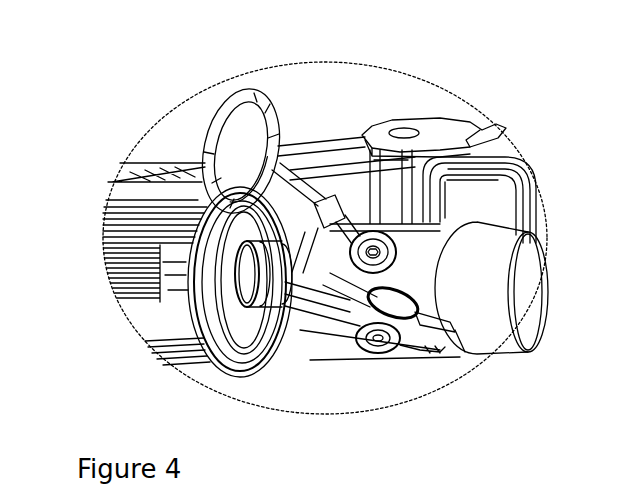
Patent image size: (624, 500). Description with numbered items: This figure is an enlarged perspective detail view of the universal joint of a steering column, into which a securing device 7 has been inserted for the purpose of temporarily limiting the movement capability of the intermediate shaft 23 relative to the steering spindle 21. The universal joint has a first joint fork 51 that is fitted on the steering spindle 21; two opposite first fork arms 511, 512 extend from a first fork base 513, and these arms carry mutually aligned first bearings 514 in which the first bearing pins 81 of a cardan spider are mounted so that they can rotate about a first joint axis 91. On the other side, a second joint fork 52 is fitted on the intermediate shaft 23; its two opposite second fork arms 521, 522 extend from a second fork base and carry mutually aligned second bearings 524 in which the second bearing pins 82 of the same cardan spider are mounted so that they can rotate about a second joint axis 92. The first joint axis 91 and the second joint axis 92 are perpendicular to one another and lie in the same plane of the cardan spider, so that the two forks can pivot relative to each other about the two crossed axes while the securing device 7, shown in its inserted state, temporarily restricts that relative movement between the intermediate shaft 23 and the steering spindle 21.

The securing device 7 is at (334, 200).
The steering spindle 21 is at (118, 256).
The intermediate shaft 23 is at (524, 294).
The first joint fork 51 is at (215, 333).
The second joint fork 52 is at (495, 252).
The first bearing pins 81 is at (375, 350).
The second bearing pins 82 is at (475, 155).
The first joint axis 91 is at (382, 347).
The second joint axis 92 is at (440, 220).
The first fork arm 511 is at (318, 360).
The first fork arm 512 is at (384, 230).
The first fork base 513 is at (300, 283).
The first bearings 514 is at (400, 350).
The second fork arm 521 is at (418, 335).
The second fork arm 522 is at (433, 333).
The second bearings 524 is at (417, 213).